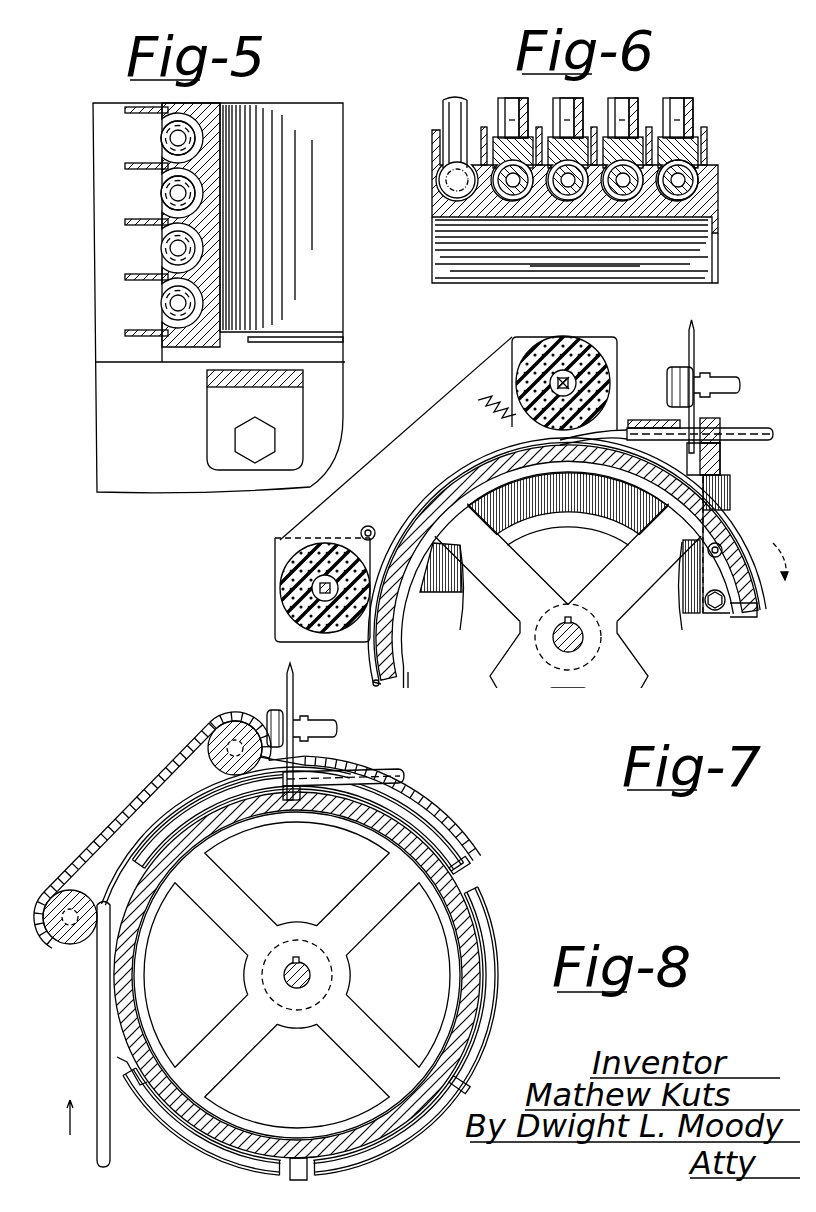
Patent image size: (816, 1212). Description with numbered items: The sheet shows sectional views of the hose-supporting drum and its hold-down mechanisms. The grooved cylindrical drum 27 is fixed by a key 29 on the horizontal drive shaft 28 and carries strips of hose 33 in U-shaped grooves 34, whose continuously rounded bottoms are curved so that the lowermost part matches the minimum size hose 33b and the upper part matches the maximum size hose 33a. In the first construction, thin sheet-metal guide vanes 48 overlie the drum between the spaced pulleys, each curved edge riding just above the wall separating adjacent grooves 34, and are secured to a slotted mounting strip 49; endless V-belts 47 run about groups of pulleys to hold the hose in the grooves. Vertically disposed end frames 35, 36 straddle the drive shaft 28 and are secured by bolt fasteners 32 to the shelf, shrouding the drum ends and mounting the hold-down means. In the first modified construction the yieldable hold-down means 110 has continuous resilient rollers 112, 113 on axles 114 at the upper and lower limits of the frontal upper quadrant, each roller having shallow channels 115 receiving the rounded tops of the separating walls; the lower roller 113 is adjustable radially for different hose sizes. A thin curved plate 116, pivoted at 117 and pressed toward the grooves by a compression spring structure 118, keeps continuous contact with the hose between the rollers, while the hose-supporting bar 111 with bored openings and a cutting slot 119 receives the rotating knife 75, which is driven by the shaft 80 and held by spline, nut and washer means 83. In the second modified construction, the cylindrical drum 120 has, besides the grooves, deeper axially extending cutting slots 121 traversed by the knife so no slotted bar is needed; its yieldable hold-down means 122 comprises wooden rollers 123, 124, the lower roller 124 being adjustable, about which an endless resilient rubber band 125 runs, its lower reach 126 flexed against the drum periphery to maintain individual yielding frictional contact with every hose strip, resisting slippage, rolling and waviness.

In FIG. 5, the hollow drum 27 is at (318, 108).
In FIG. 6, the hollow drum 27 is at (438, 268).
In FIG. 7, the hollow drum 27 is at (750, 614).
In FIG. 7, the drive shaft 28 is at (577, 637).
In FIG. 8, the drive shaft 28 is at (303, 978).
In FIG. 7, the key 29 is at (573, 620).
In FIG. 8, the key 29 is at (300, 960).
In FIG. 5, the bolt fasteners 32 is at (250, 455).
In FIG. 5, the strips of hose 33 is at (163, 192).
In FIG. 7, the strips of hose 33 is at (747, 430).
In FIG. 8, the strips of hose 33 is at (102, 1148).
In FIG. 6, the maximum size hose 33a is at (440, 182).
In FIG. 6, the minimum size hose 33b is at (698, 181).
In FIG. 5, the grooves 34 is at (199, 133).
In FIG. 6, the grooves 34 is at (688, 190).
In FIG. 7, the grooves 34 is at (715, 550).
In FIG. 8, the grooves 34 is at (170, 1122).
In FIG. 7, the end frame 35 is at (697, 630).
In FIG. 5, the end frame 36 is at (287, 378).
In FIG. 6, the V-belt 47 is at (566, 104).
In FIG. 5, the guide vanes 48 is at (140, 333).
In FIG. 6, the guide vanes 48 is at (597, 128).
In FIG. 5, the mounting strip 49 is at (107, 354).
In FIG. 7, the rotating knife 75 is at (695, 333).
In FIG. 8, the rotating knife 75 is at (293, 697).
In FIG. 7, the shaft 80 is at (727, 377).
In FIG. 8, the shaft 80 is at (317, 730).
In FIG. 7, the spline and nut fastener and washer means 83 is at (675, 363).
In FIG. 8, the spline and nut fastener and washer means 83 is at (275, 713).
In FIG. 7, the yieldable hold-down means 110 is at (453, 370).
In FIG. 7, the hose-supporting bar 111 is at (722, 455).
In FIG. 7, the upper roller 112 is at (593, 350).
In FIG. 7, the lower roller 113 is at (285, 540).
In FIG. 7, the axles 114 is at (557, 377).
In FIG. 7, the channels 115 is at (560, 340).
In FIG. 7, the curved plate 116 is at (437, 480).
In FIG. 7, the pivot 117 is at (376, 503).
In FIG. 7, the compression spring structure 118 is at (493, 417).
In FIG. 7, the cutting slot 119 is at (723, 473).
In FIG. 8, the cylindrical drum 120 is at (227, 1140).
In FIG. 8, the cutting slots 121 is at (470, 860).
In FIG. 8, the yieldable hold-down means 122 is at (147, 787).
In FIG. 8, the upper roller 123 is at (235, 733).
In FIG. 8, the lower roller 124 is at (77, 957).
In FIG. 8, the endless band 125 is at (193, 750).
In FIG. 8, the lower reach 126 is at (187, 800).